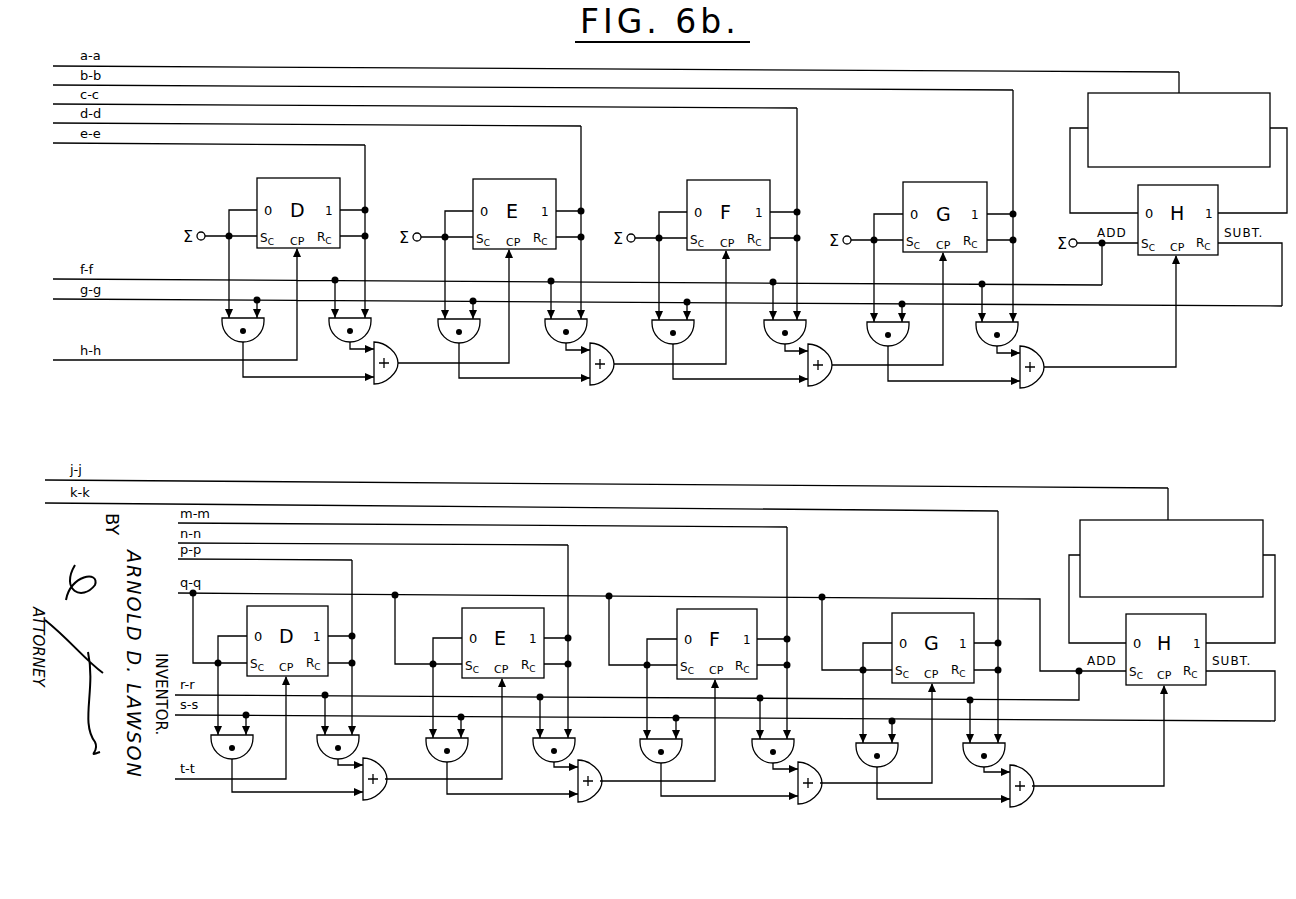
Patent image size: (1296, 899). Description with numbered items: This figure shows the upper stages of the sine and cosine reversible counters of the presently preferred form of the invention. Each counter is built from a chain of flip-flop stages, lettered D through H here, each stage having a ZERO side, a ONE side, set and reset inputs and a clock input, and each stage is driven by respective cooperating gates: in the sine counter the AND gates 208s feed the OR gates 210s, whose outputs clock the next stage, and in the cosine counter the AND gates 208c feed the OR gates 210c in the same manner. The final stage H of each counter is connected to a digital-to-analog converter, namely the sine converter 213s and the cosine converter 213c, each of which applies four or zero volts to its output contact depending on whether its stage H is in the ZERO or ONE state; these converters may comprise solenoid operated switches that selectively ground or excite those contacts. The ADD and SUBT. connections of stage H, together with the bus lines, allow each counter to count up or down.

The digital-to-analog converter 213s is at (1210, 93).
The AND gate 208s is at (1045, 321).
The OR gate 210s is at (1061, 382).
The digital-to-analog converter 213c is at (1193, 520).
The AND gate 208c is at (1030, 740).
The OR gate 210c is at (1050, 796).